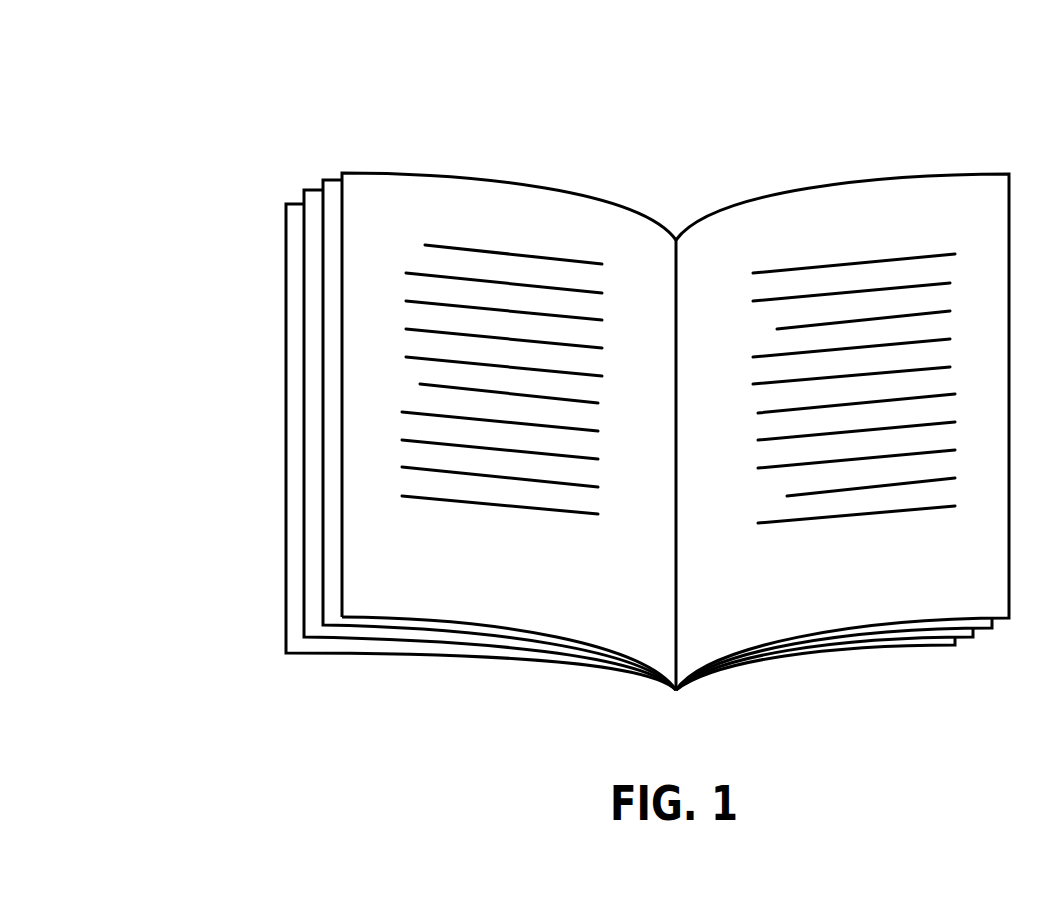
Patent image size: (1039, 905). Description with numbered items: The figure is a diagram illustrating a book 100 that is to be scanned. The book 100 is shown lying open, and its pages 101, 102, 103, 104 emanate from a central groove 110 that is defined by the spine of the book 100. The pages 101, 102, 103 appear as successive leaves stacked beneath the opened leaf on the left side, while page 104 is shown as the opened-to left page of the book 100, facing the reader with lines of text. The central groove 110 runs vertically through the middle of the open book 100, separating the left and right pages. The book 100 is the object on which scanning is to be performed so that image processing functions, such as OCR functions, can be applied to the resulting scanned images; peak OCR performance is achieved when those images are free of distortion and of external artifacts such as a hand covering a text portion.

The book 100 is at (172, 55).
The page 101 is at (286, 204).
The page 102 is at (305, 190).
The page 103 is at (335, 180).
The page 104 is at (392, 173).
The central groove 110 is at (676, 226).